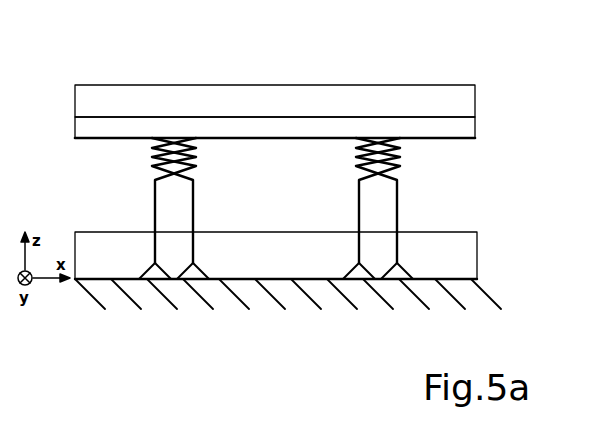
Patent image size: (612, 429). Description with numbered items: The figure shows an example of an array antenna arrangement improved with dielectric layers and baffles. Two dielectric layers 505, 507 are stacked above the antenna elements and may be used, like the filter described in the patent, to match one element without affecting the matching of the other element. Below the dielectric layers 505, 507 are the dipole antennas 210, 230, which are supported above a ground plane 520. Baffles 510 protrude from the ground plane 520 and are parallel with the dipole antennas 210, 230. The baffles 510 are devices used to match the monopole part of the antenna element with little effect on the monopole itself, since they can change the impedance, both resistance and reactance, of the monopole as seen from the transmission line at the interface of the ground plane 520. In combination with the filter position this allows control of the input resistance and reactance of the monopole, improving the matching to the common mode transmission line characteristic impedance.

The dielectric layer 505 is at (442, 100).
The dielectric layer 507 is at (460, 125).
The dipole antenna 210 is at (430, 140).
The dipole antenna 230 is at (312, 140).
The baffle 510 is at (460, 252).
The ground plane 520 is at (468, 301).